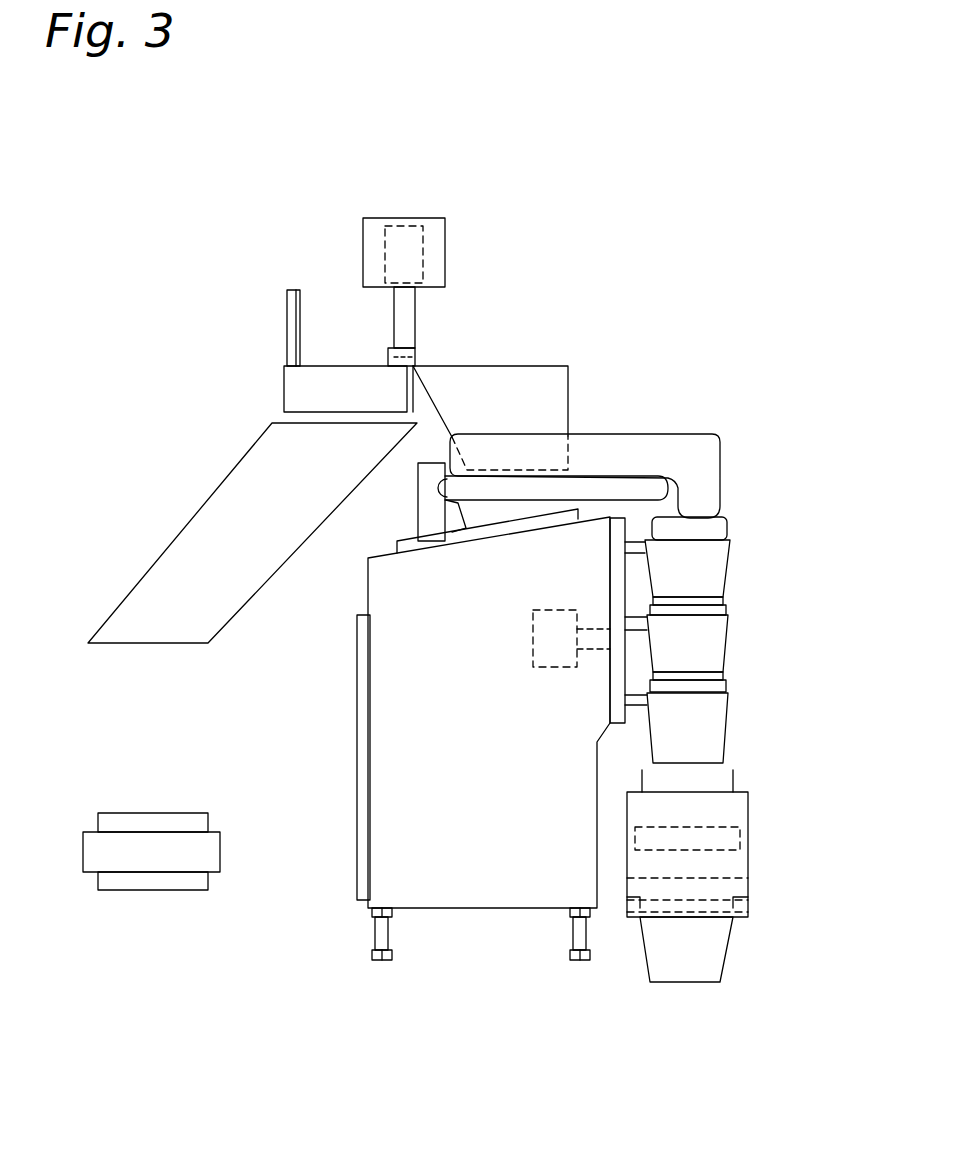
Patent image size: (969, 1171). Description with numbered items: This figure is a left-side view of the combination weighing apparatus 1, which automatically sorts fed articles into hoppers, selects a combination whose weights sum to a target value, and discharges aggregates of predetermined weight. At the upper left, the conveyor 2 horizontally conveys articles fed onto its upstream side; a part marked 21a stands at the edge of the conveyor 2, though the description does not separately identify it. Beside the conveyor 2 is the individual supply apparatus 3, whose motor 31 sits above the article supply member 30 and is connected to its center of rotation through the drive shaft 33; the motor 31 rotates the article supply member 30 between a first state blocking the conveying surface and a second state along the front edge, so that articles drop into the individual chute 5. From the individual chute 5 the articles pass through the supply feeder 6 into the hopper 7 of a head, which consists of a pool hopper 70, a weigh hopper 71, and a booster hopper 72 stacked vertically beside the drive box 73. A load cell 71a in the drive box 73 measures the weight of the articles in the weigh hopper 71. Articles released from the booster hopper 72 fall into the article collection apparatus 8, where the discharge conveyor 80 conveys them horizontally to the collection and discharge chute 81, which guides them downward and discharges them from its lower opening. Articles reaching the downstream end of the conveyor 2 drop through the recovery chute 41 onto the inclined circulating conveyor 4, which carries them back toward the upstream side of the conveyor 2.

The combination weighing apparatus 1 is at (654, 288).
The conveyor 2 is at (308, 334).
The guide plate 21a is at (335, 362).
The individual supply apparatus 3 is at (450, 249).
The article supply member 30 is at (402, 348).
The motor 31 is at (398, 242).
The drive shaft 33 is at (405, 318).
The circulating conveyor 4 is at (167, 858).
The recovery chute 41 is at (173, 580).
The individual chute 5 is at (548, 380).
The supply feeder 6 is at (654, 447).
The hopper 7 is at (743, 640).
The pool hopper 70 is at (710, 578).
The weigh hopper 71 is at (710, 638).
The load cell 71a is at (548, 664).
The booster hopper 72 is at (717, 727).
The drive box 73 is at (441, 734).
The article collection apparatus 8 is at (728, 923).
The discharge conveyor 80 is at (727, 843).
The collection and discharge chute 81 is at (670, 968).